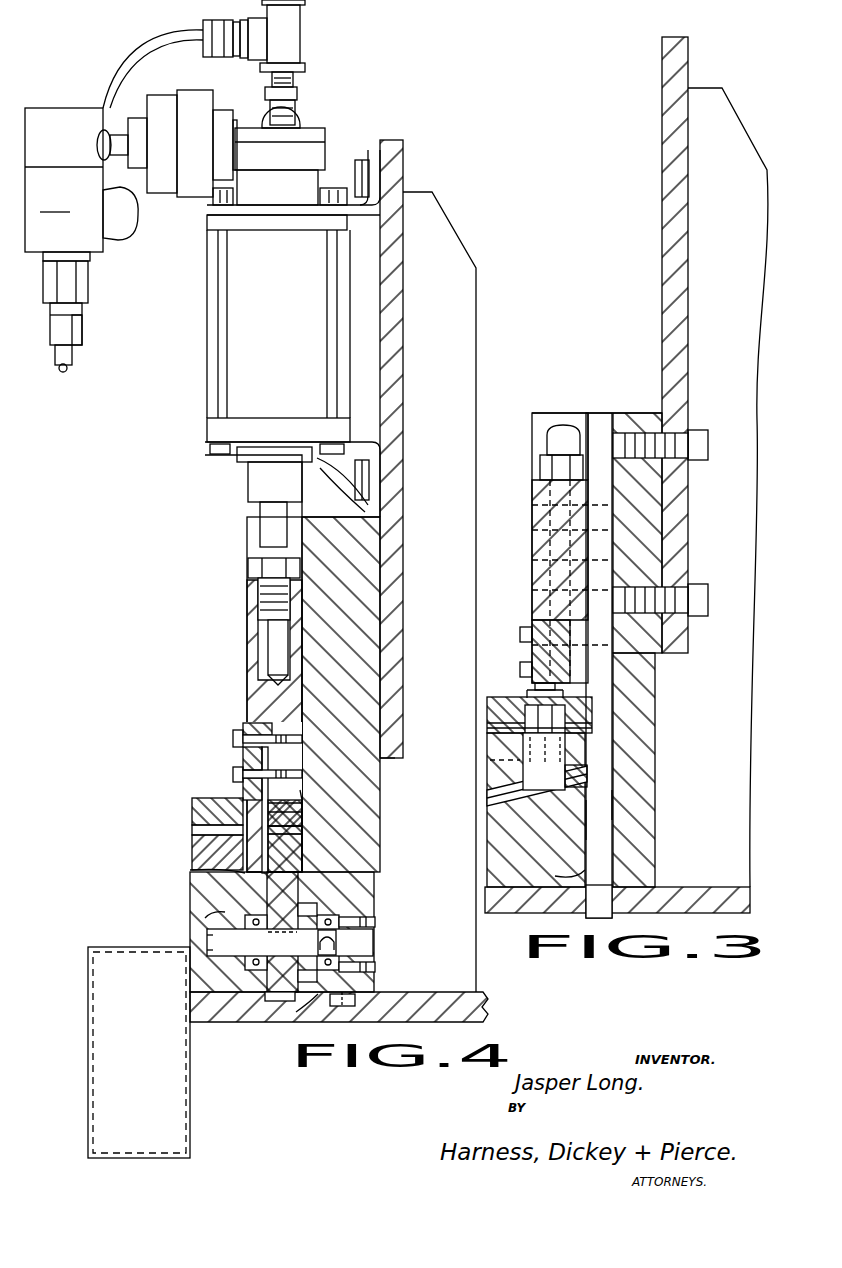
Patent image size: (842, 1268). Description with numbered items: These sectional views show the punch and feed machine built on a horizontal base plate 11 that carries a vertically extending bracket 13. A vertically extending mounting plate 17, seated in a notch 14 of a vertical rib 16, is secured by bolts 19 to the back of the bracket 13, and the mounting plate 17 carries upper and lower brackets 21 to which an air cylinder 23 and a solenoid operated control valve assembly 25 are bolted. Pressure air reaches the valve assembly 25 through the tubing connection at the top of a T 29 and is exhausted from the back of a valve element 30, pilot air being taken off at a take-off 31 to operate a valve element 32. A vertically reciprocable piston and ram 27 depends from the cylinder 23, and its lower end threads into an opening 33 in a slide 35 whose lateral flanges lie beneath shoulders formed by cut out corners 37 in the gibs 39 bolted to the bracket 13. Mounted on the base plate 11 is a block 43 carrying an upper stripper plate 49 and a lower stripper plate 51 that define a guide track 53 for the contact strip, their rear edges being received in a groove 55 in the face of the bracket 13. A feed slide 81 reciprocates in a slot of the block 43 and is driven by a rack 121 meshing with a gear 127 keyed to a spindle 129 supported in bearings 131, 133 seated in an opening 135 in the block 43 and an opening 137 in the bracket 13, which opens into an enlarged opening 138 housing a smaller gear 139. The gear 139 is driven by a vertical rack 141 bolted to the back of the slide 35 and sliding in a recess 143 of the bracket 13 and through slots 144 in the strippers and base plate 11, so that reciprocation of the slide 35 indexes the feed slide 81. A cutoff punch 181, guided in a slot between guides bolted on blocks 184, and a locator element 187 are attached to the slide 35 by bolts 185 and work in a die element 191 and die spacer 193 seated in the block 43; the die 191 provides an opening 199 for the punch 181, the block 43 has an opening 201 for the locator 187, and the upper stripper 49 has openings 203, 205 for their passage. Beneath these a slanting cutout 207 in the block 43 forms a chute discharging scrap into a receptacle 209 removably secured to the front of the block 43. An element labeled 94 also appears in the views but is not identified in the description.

In FIG. 4, the base plate 11 is at (485, 1000).
In FIG. 3, the base plate 11 is at (690, 887).
In FIG. 4, the bracket 13 is at (348, 740).
In FIG. 3, the bracket 13 is at (658, 785).
In FIG. 4, the notch 14 is at (396, 756).
In FIG. 3, the notch 14 is at (688, 642).
In FIG. 4, the vertical rib 16 is at (455, 356).
In FIG. 3, the vertical rib 16 is at (722, 88).
In FIG. 4, the mounting plate 17 is at (403, 150).
In FIG. 3, the mounting plate 17 is at (676, 243).
In FIG. 3, the bolts 19 is at (692, 592).
In FIG. 4, the brackets 21 is at (348, 186).
In FIG. 4, the air cylinder 23 is at (205, 330).
In FIG. 4, the solenoid operated control valve assembly 25 is at (53, 106).
In FIG. 4, the piston and ram 27 is at (262, 516).
In FIG. 4, the T 29 is at (305, 4).
In FIG. 4, the valve element 30 is at (305, 148).
In FIG. 4, the pilot air take-off 31 is at (190, 30).
In FIG. 4, the valve element 32 is at (55, 200).
In FIG. 4, the opening 33 is at (262, 596).
In FIG. 4, the slide 35 is at (247, 686).
In FIG. 3, the slide 35 is at (532, 542).
In FIG. 3, the cut out corners 37 is at (598, 413).
In FIG. 3, the gibs 39 is at (552, 422).
In FIG. 4, the block 43 is at (190, 888).
In FIG. 3, the block 43 is at (542, 862).
In FIG. 4, the upper stripper plate 49 is at (192, 806).
In FIG. 3, the upper stripper plate 49 is at (505, 686).
In FIG. 4, the lower stripper plate 51 is at (306, 826).
In FIG. 3, the lower stripper plate 51 is at (572, 728).
In FIG. 4, the guide track 53 is at (304, 806).
In FIG. 4, the groove 55 is at (306, 815).
In FIG. 3, the slide 81 is at (580, 752).
In FIG. 3, the slot 94 is at (537, 807).
In FIG. 4, the rack 121 is at (292, 880).
In FIG. 3, the rack 121 is at (598, 780).
In FIG. 4, the gear 127 is at (262, 1024).
In FIG. 4, the spindle 129 is at (207, 938).
In FIG. 4, the bearing 131 is at (252, 905).
In FIG. 4, the bearing 133 is at (340, 933).
In FIG. 4, the opening 135 is at (272, 995).
In FIG. 4, the opening 137 is at (332, 918).
In FIG. 4, the enlarged opening 138 is at (312, 905).
In FIG. 4, the smaller gear 139 is at (302, 1012).
In FIG. 3, the vertical rack 141 is at (600, 826).
In FIG. 3, the recess 143 is at (612, 806).
In FIG. 3, the slots 144 is at (562, 870).
In FIG. 4, the cutoff punch 181 is at (243, 758).
In FIG. 3, the cutoff punch 181 is at (520, 668).
In FIG. 3, the blocks 184 is at (520, 634).
In FIG. 4, the attachment bolts 185 is at (243, 729).
In FIG. 3, the attachment bolts 185 is at (532, 625).
In FIG. 4, the locator element 187 is at (243, 739).
In FIG. 3, the locator element 187 is at (578, 712).
In FIG. 4, the die element 191 is at (192, 847).
In FIG. 4, the die spacer 193 is at (245, 875).
In FIG. 4, the opening 199 is at (210, 828).
In FIG. 4, the opening 201 is at (300, 838).
In FIG. 4, the opening 203 is at (262, 790).
In FIG. 4, the opening 205 is at (302, 796).
In FIG. 4, the slanting cutout 207 is at (205, 914).
In FIG. 4, the receptacle 209 is at (88, 1058).